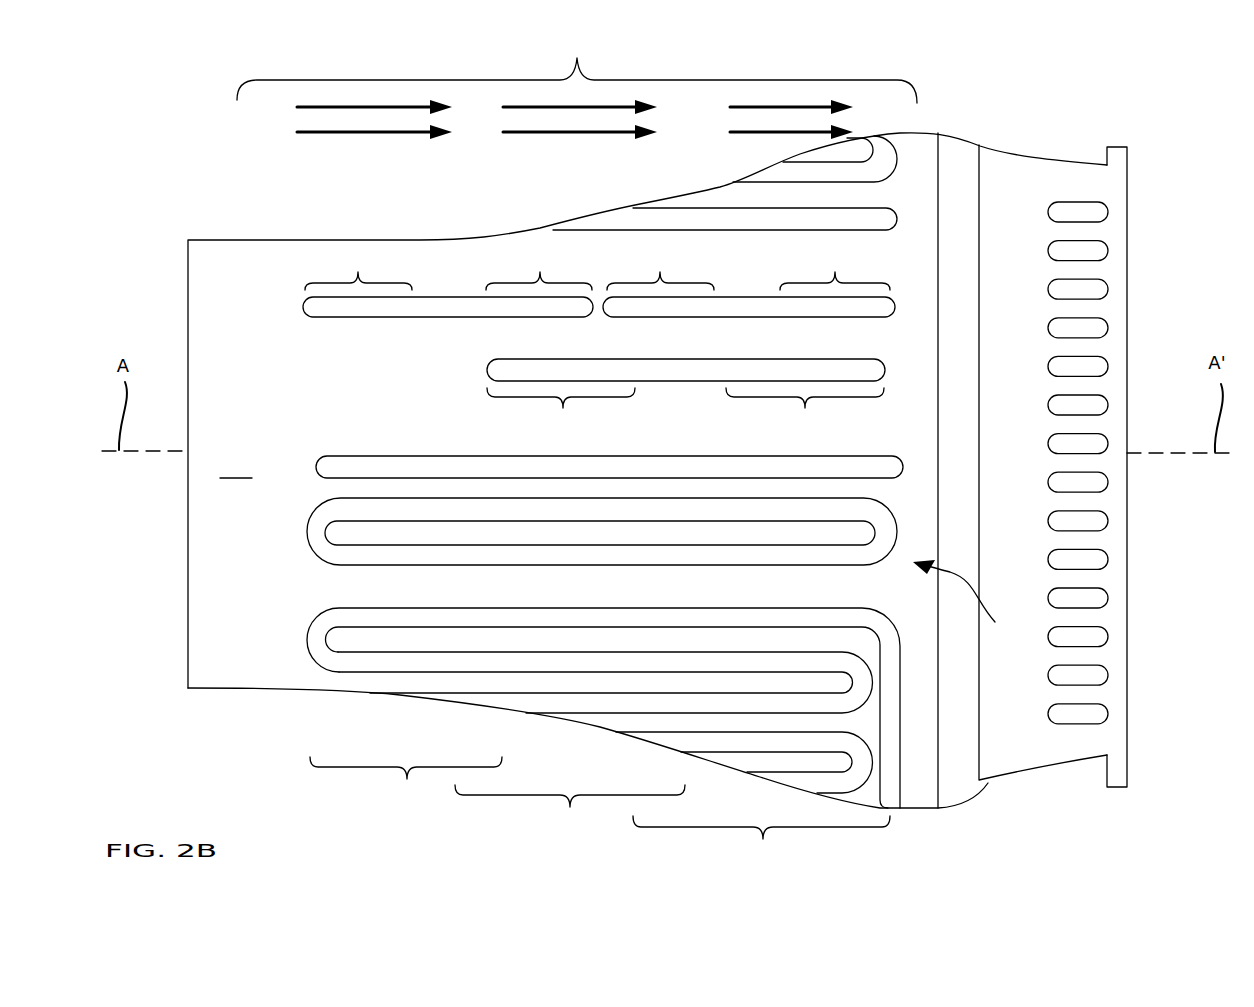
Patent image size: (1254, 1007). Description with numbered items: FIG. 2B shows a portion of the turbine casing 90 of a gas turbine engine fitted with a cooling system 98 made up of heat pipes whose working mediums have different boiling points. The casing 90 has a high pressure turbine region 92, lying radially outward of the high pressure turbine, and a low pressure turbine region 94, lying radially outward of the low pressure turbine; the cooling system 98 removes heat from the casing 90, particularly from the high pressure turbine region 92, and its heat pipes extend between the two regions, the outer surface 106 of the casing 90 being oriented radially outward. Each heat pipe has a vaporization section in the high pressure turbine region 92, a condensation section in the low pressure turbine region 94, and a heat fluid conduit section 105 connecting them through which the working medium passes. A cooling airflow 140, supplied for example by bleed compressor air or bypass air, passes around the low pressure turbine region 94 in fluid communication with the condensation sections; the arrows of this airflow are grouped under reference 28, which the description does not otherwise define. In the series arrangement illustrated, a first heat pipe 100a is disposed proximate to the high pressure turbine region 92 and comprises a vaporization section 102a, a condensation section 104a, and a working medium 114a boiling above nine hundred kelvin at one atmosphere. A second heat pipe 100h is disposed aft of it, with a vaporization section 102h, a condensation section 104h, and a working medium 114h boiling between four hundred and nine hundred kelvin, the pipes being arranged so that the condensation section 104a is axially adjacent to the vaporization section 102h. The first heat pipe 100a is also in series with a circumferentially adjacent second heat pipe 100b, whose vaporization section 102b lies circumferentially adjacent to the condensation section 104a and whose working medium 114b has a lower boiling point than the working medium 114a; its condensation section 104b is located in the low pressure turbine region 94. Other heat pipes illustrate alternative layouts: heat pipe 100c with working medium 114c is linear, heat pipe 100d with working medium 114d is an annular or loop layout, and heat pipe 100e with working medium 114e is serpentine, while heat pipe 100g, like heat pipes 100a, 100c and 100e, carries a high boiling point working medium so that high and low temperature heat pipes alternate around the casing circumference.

The airflow / core flow 28 is at (577, 67).
The cooling airflow 140 is at (347, 133).
The turbine casing 90 is at (238, 633).
The high pressure turbine region 92 is at (406, 785).
The low pressure turbine region 94 is at (761, 842).
The cooling system 98 is at (969, 599).
The heat fluid conduit section 105 is at (570, 817).
The outer surface 106 is at (236, 468).
The first heat pipe 100a is at (302, 307).
The second heat pipe 100b is at (486, 370).
The heat pipe 100c is at (357, 455).
The heat pipe 100d is at (311, 556).
The heat pipe 100e is at (315, 655).
The heat pipe 100g is at (885, 176).
The second heat pipe 100h is at (645, 316).
The vaporization section 102a is at (358, 266).
The vaporization section 102b is at (561, 413).
The vaporization section 102h is at (660, 266).
The condensation section 104a is at (539, 266).
The condensation section 104b is at (805, 416).
The condensation section 104h is at (835, 266).
The working medium 114a is at (365, 310).
The working medium 114b is at (866, 375).
The working medium 114c is at (876, 467).
The working medium 114d is at (862, 562).
The working medium 114e is at (640, 613).
The working medium 114h is at (722, 305).